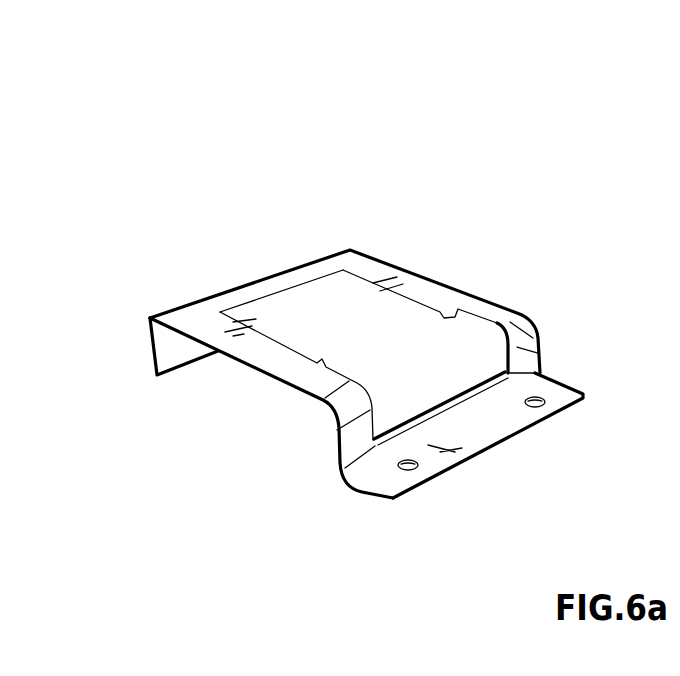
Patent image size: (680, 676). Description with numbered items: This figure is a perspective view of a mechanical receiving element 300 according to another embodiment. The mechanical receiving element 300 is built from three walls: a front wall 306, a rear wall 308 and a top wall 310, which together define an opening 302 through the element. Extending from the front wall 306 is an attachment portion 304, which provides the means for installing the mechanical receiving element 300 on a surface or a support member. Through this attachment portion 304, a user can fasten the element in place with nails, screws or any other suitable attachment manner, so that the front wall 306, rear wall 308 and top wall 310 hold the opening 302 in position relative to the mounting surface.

The mechanical receiving element 300 is at (326, 172).
The opening 302 is at (410, 305).
The attachment portion 304 is at (473, 440).
The front wall 306 is at (483, 398).
The rear wall 308 is at (287, 308).
The top wall 310 is at (395, 273).